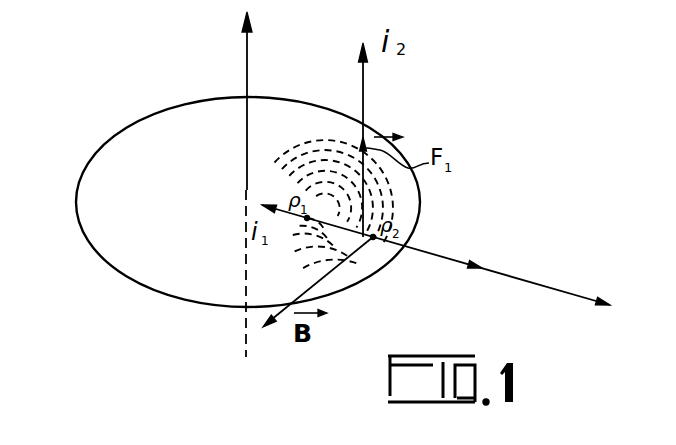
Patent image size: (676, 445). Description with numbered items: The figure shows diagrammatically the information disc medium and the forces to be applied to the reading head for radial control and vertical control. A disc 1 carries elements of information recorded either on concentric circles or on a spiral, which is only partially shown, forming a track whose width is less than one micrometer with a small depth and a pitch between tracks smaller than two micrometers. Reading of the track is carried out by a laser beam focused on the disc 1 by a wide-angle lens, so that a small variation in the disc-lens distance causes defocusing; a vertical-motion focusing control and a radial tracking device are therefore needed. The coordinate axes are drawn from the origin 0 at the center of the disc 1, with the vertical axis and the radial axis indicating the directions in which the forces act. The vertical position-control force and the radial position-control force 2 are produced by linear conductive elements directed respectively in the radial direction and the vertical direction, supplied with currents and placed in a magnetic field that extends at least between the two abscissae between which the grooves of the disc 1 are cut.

The disc 1 is at (80, 187).
The origin of coordinate system 0 is at (233, 184).
The radial rho axis with force F2 2 is at (444, 261).